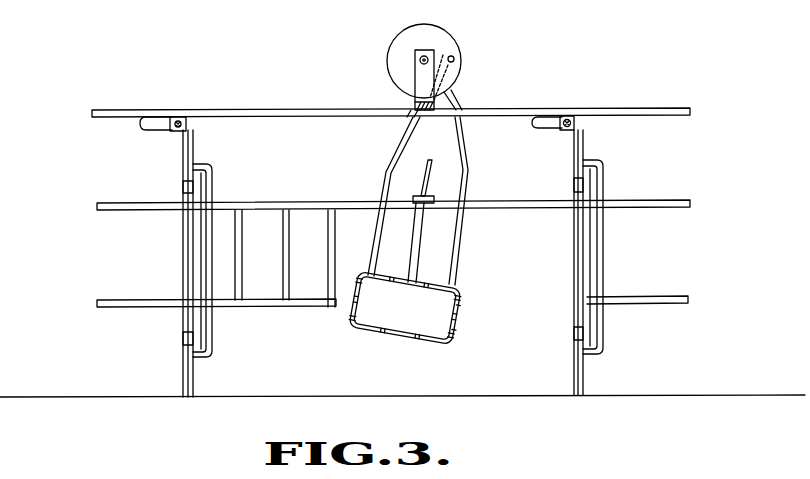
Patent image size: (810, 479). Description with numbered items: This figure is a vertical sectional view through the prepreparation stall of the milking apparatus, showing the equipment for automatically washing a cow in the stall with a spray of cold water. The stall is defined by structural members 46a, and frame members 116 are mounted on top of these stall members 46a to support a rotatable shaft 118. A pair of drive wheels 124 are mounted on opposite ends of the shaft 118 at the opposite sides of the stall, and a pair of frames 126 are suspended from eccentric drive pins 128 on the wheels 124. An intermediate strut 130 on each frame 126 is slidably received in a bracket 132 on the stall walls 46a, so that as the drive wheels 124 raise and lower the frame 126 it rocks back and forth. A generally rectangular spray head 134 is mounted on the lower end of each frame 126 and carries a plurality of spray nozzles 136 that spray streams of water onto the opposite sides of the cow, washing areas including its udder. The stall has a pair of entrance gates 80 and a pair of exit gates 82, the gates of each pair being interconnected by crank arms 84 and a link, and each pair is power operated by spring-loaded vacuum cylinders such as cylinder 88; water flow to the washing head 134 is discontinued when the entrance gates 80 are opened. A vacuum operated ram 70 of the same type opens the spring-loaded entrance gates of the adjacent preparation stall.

The structural members 46a is at (230, 110).
The vacuum operated ram 70 is at (156, 131).
The crank arms 84 is at (181, 133).
The exit gates 82 is at (210, 358).
The entrance gates 80 is at (603, 345).
The spring-loaded vacuum cylinder 88 is at (536, 126).
The frame members 116 is at (418, 82).
The rotatable shaft 118 is at (420, 60).
The drive wheels 124 is at (447, 38).
The eccentric drive pins 128 is at (455, 59).
The frames 126 is at (467, 178).
The intermediate strut 130 is at (447, 145).
The bracket 132 is at (414, 197).
The spray head 134 is at (398, 334).
The spray nozzles 136 is at (438, 320).